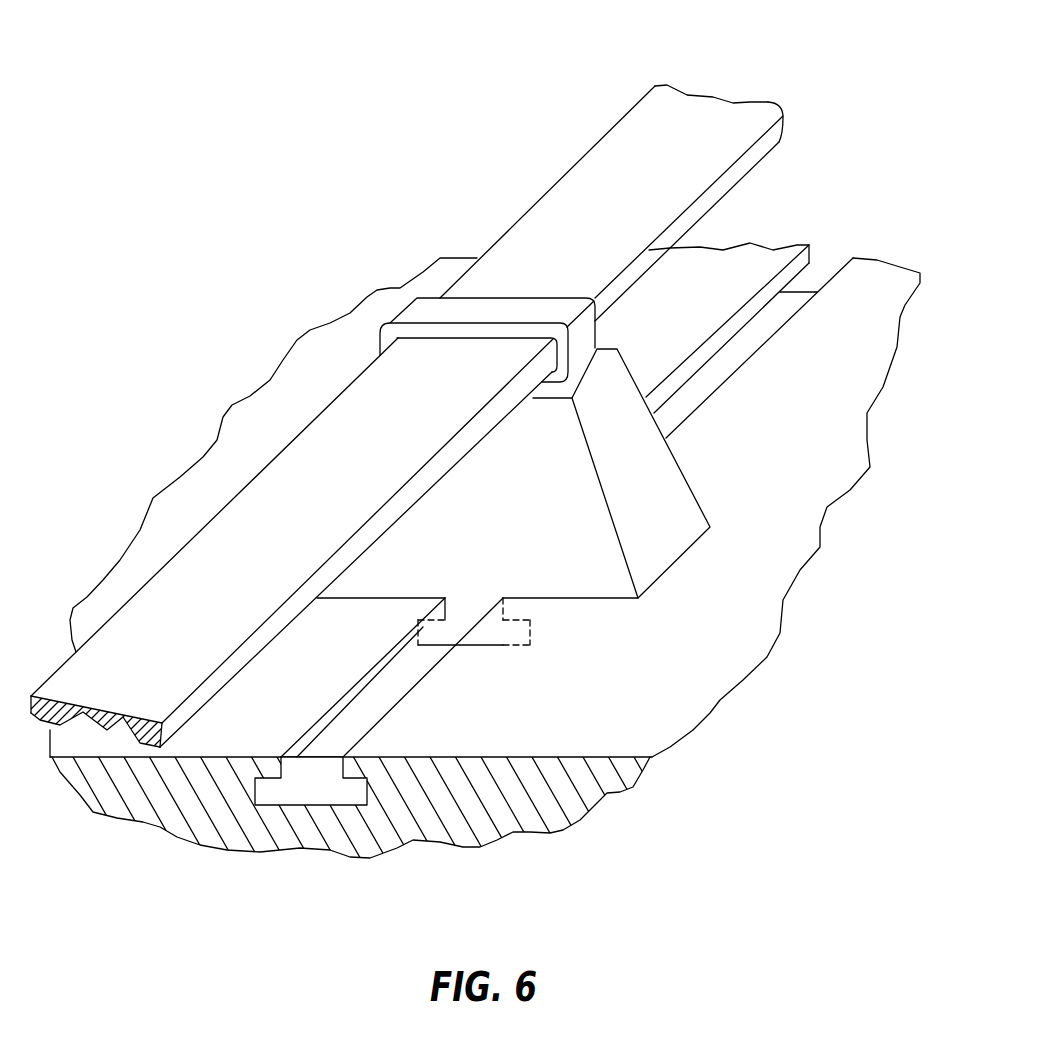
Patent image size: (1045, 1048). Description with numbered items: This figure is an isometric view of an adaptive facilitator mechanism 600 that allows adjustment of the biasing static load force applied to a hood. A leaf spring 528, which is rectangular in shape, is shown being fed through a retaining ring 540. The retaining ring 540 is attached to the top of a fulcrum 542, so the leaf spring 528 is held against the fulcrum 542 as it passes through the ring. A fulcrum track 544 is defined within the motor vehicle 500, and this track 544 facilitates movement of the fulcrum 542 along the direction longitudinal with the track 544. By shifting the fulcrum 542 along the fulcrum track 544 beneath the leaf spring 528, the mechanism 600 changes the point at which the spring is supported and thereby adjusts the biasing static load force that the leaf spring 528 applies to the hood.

The motor vehicle 500 is at (777, 537).
The leaf spring 528 is at (705, 113).
The retaining ring 540 is at (413, 307).
The fulcrum 542 is at (573, 513).
The fulcrum track 544 is at (320, 788).
The adaptive facilitator mechanism 600 is at (158, 340).